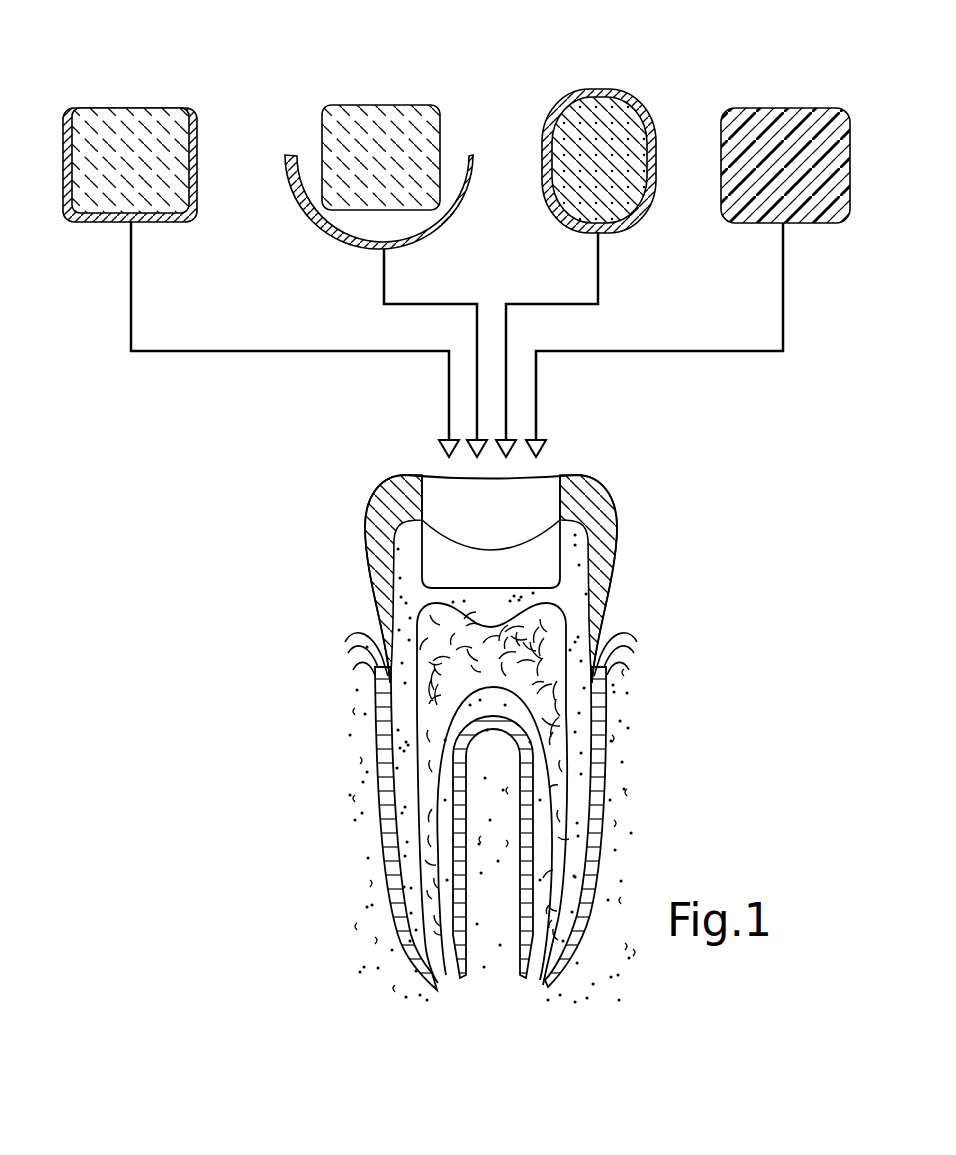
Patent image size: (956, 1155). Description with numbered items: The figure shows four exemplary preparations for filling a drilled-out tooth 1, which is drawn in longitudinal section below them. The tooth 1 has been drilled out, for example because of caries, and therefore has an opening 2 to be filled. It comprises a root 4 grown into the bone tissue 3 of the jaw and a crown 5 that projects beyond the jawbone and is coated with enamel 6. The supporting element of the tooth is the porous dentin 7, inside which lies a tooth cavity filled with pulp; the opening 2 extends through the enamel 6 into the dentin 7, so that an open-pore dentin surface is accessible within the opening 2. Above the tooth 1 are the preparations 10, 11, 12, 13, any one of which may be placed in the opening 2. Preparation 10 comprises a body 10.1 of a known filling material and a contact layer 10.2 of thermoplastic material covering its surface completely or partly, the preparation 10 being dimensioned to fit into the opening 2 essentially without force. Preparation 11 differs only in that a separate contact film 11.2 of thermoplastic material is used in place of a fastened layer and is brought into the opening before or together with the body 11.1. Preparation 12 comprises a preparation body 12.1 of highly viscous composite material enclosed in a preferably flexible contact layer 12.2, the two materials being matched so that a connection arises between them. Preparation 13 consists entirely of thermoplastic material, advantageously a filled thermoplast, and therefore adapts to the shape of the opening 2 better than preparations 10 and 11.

The tooth 1 is at (493, 735).
The opening 2 is at (499, 529).
The bone tissue 3 is at (639, 807).
The root 4 is at (365, 834).
The crown 5 is at (350, 518).
The enamel 6 is at (590, 490).
The dentin 7 is at (412, 596).
The preparation 10 is at (143, 148).
The body 10.1 is at (153, 128).
The contact layer 10.2 is at (169, 221).
The preparation 11 is at (403, 148).
The body 11.1 is at (398, 127).
The contact film 11.2 is at (455, 216).
The preparation 12 is at (615, 148).
The preparation body 12.1 is at (610, 120).
The contact layer 12.2 is at (640, 218).
The preparation 13 is at (754, 93).